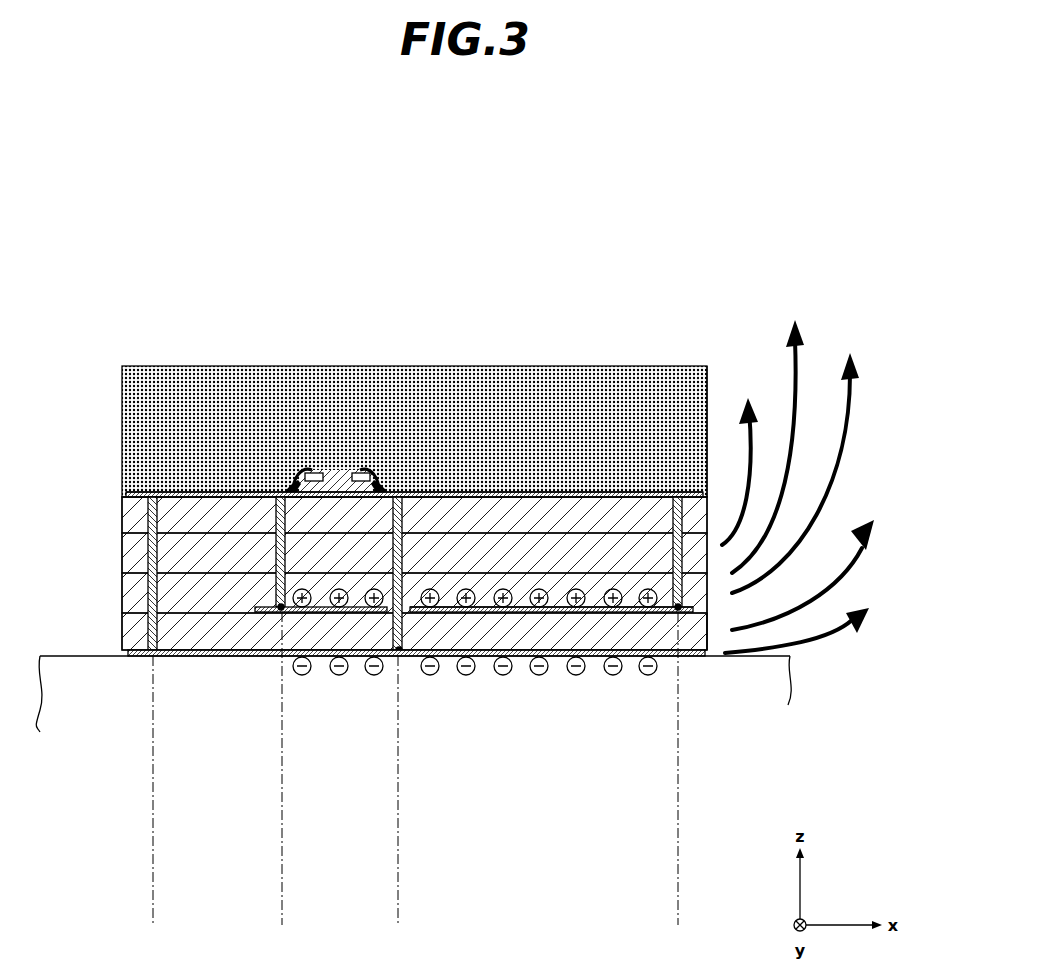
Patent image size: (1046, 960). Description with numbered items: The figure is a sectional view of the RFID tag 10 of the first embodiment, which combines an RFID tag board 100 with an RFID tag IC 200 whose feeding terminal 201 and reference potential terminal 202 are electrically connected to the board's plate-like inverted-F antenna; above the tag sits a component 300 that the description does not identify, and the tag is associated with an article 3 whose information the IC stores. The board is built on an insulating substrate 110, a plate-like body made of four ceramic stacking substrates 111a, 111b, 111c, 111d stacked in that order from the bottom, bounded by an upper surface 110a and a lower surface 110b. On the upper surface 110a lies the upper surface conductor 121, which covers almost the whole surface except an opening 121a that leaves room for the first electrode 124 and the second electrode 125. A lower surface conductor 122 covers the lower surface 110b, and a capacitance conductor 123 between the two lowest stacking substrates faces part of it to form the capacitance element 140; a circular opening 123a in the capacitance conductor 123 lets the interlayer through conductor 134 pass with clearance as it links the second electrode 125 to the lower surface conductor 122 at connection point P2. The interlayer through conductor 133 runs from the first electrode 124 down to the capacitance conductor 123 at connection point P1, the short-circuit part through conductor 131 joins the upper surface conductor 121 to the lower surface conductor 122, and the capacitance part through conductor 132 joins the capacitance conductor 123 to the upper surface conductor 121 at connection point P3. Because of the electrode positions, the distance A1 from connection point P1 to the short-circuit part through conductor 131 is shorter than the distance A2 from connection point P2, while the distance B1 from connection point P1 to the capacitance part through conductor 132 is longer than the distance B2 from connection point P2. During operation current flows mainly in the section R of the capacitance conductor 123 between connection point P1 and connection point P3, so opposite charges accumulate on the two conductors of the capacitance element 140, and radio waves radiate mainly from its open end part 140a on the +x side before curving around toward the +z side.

The RFID tag 10 is at (268, 206).
The heat dissipation member 300 is at (660, 400).
The upper surface 110a is at (707, 458).
The RFID tag IC 200 is at (317, 392).
The feeding terminal 201 is at (318, 474).
The reference potential terminal 202 is at (361, 474).
The interlayer through conductor 133 is at (268, 498).
The interlayer through conductor 134 is at (390, 496).
The upper surface conductor 121 is at (318, 492).
The opening 121a is at (252, 490).
The insulating substrate 110 is at (362, 671).
The stacking substrate 111a is at (252, 633).
The stacking substrate 111b is at (252, 595).
The stacking substrate 111c is at (248, 557).
The stacking substrate 111d is at (248, 517).
The short-circuit part through conductor 131 is at (150, 640).
The first electrode 124 is at (280, 520).
The second electrode 125 is at (396, 497).
The capacitance part through conductor 132 is at (678, 550).
The lower surface conductor 122 is at (321, 691).
The capacitance conductor 123 is at (526, 691).
The opening 123a is at (410, 605).
The capacitance element 140 is at (295, 780).
The connection point P1 is at (281, 610).
The connection point P2 is at (455, 487).
The connection point P3 is at (678, 610).
The lower surface 110b is at (700, 656).
The open end part 140a is at (702, 629).
The RFID tag board 100 is at (129, 490).
The article 3 is at (800, 685).
The section R is at (678, 830).
The distance A1 is at (160, 880).
The distance A2 is at (391, 918).
The distance B1 is at (289, 880).
The distance B2 is at (405, 918).